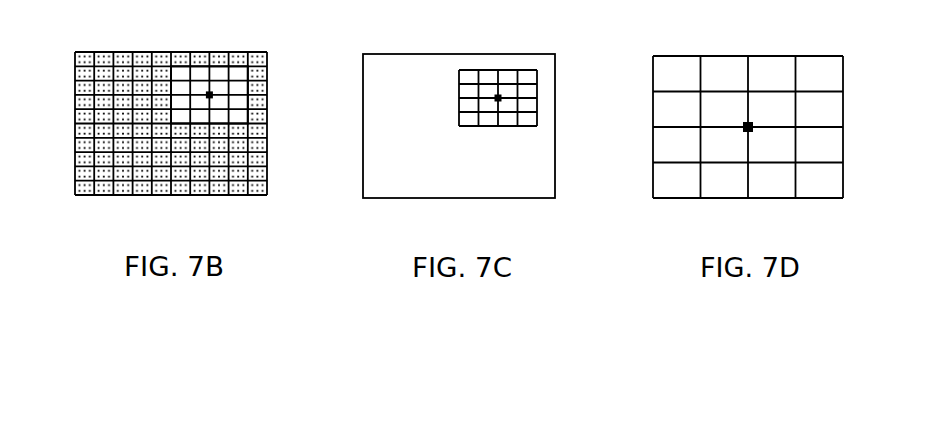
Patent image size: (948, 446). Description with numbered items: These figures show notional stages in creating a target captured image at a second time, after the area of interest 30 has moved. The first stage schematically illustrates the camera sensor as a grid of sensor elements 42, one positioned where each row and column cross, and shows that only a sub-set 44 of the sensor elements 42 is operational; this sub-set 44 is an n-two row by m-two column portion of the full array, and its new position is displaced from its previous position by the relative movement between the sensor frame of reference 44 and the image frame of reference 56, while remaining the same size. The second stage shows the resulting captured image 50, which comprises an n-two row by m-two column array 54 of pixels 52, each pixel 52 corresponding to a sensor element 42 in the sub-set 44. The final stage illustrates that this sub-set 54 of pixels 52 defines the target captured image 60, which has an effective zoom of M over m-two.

In FIG. 7B, the area of interest 30 is at (208, 91).
In FIG. 7C, the area of interest 30 is at (497, 94).
In FIG. 7D, the area of interest 30 is at (745, 127).
In FIG. 7B, the sensor elements 42 is at (87, 168).
In FIG. 7B, the sub-set of the array of sensor elements 44 is at (144, 146).
In FIG. 7C, the sub-set of the array of sensor elements 44 is at (459, 127).
In FIG. 7C, the captured image 50 is at (476, 126).
In FIG. 7D, the pixels 52 is at (796, 129).
In FIG. 7C, the array of pixels 54 is at (458, 105).
In FIG. 7C, the image frame of reference 56 is at (405, 66).
In FIG. 7D, the target captured image 60 is at (771, 124).